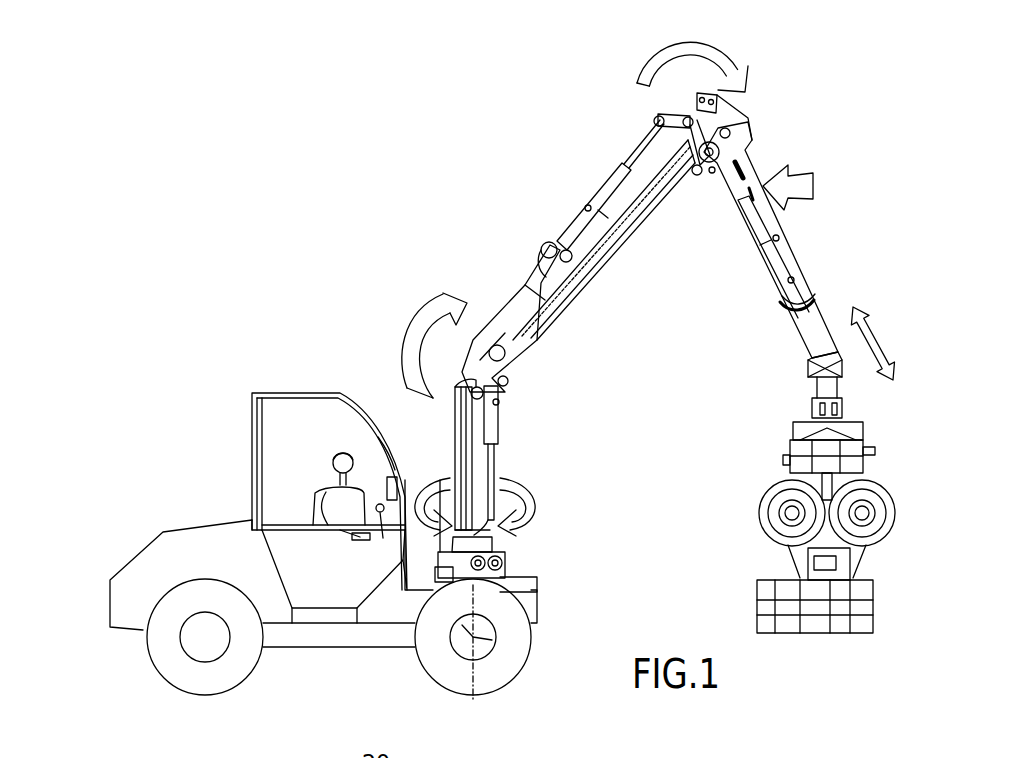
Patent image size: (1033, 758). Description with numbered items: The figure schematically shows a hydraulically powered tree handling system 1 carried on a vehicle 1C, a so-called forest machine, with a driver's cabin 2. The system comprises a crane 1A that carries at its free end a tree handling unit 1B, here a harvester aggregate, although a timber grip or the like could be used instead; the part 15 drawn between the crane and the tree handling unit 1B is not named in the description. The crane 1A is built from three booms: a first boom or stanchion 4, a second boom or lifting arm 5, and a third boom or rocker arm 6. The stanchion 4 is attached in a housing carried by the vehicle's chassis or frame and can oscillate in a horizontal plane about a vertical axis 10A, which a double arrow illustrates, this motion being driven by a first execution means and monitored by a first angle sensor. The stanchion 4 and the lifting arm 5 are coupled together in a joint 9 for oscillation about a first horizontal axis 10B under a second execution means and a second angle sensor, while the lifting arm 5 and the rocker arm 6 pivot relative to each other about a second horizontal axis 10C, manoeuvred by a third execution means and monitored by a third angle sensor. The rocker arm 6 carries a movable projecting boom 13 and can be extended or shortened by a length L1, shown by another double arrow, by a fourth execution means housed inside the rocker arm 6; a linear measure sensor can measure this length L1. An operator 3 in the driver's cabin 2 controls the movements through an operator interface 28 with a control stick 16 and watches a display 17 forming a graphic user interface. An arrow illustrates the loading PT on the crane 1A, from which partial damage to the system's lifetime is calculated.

The tree handling system 1 is at (514, 150).
The crane 1A is at (494, 280).
The tree handling unit 1B is at (895, 476).
The vehicle 1C is at (322, 662).
The driver's cabin 2 is at (306, 395).
The operator 3 is at (322, 490).
The first boom (stanchion) 4 is at (457, 448).
The second boom (lifting arm) 5 is at (610, 250).
The third boom (rocker arm) 6 is at (783, 253).
The joint 9 is at (507, 380).
The vertical axis 10A is at (492, 640).
The first horizontal axis 10B is at (517, 373).
The second horizontal axis 10C is at (738, 155).
The projecting boom 13 is at (813, 327).
The rotator 15 is at (807, 375).
The control stick 16 is at (383, 540).
The display 17 is at (383, 440).
The operator interface 28 is at (345, 537).
The loading PT is at (817, 175).
The length L1 is at (880, 325).